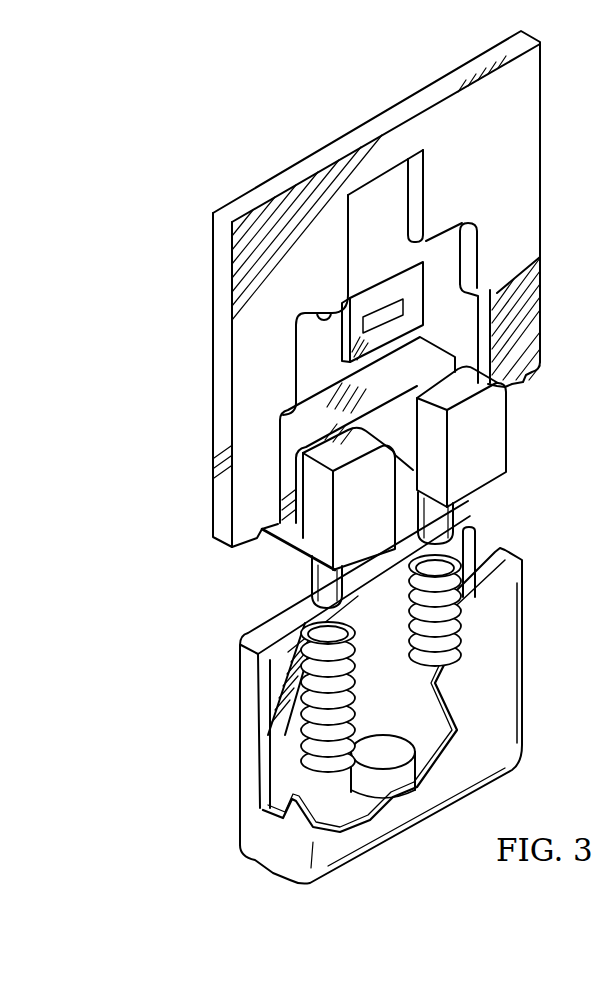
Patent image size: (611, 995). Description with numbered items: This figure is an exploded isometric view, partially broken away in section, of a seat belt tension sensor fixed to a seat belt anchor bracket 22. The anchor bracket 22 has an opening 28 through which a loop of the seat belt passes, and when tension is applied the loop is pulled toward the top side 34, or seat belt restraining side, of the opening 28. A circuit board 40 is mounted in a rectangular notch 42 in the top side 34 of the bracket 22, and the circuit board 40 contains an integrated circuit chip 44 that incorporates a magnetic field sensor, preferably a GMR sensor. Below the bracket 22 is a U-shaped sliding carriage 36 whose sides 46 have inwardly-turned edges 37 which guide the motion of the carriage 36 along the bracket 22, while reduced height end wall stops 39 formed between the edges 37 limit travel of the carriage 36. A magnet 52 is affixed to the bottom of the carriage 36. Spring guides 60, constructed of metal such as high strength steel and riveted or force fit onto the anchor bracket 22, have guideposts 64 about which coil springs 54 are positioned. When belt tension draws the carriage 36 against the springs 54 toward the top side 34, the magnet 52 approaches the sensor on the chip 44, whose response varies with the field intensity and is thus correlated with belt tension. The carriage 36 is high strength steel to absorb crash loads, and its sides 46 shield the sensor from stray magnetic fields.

The seat belt anchor bracket 22 is at (213, 508).
The opening 28 is at (540, 257).
The top side 34 is at (329, 306).
The sliding carriage 36 is at (523, 652).
The inwardly-turned edges 37 is at (262, 677).
The end wall stops 39 is at (253, 848).
The circuit board 40 is at (427, 283).
The rectangular notch 42 is at (425, 188).
The integrated circuit chip 44 is at (379, 286).
The sides 46 is at (245, 633).
The magnet 52 is at (378, 736).
The coil springs 54 is at (505, 552).
The spring guides 60 is at (351, 525).
The guideposts 64 is at (311, 577).